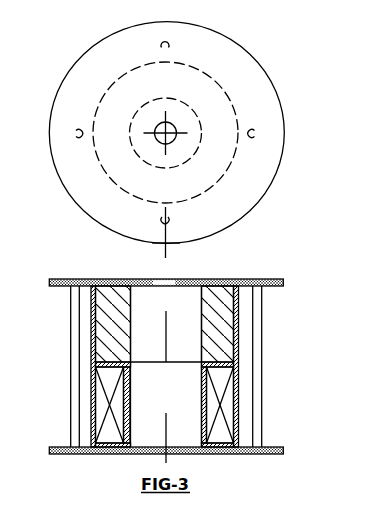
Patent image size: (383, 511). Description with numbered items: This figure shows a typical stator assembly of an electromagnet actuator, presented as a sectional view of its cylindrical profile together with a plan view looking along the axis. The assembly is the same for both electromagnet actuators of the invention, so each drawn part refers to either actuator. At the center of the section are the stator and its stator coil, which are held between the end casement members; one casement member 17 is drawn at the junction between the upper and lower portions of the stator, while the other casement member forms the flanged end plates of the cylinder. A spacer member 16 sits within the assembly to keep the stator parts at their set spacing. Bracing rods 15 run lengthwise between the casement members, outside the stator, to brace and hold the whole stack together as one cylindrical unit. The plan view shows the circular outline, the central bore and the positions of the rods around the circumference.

The bracing rods 15 is at (70, 353).
The spacer member 16 is at (95, 298).
The casement member 17 is at (95, 357).